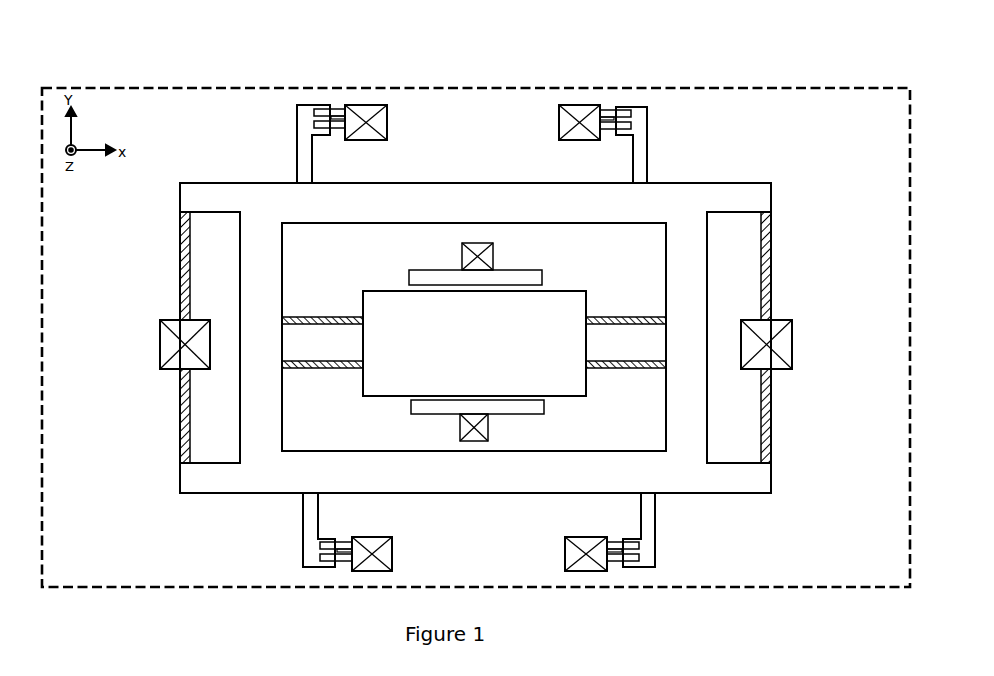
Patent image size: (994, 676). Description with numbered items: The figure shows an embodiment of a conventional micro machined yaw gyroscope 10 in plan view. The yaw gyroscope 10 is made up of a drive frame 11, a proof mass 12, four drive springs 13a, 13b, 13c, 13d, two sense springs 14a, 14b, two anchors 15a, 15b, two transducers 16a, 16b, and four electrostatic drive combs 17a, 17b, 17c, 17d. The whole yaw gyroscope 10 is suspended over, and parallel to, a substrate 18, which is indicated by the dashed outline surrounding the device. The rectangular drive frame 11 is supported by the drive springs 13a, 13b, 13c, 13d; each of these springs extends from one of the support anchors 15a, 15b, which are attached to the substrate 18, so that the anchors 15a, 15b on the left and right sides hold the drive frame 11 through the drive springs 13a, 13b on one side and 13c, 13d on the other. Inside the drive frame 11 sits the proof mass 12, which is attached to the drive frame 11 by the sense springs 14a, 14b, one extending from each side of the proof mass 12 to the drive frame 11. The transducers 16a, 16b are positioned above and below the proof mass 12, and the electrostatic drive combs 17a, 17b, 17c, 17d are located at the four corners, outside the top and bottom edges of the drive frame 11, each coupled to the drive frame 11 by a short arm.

The yaw gyroscope 10 is at (754, 57).
The drive frame 11 is at (666, 182).
The proof mass 12 is at (572, 289).
The drive spring 13a is at (180, 420).
The drive spring 13b is at (180, 250).
The drive spring 13c is at (771, 238).
The drive spring 13d is at (771, 448).
The sense spring 14a is at (302, 317).
The sense spring 14b is at (610, 317).
The anchor 15a is at (160, 331).
The anchor 15b is at (792, 338).
The transducer 16a is at (489, 425).
The transducer 16b is at (494, 259).
The electrostatic drive comb 17a is at (372, 537).
The electrostatic drive comb 17b is at (586, 541).
The electrostatic drive comb 17c is at (372, 103).
The electrostatic drive comb 17d is at (577, 103).
The substrate 18 is at (815, 87).